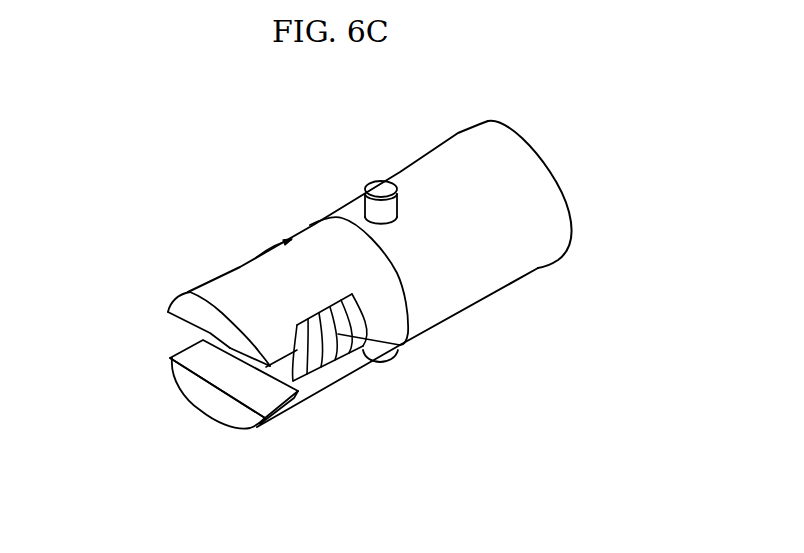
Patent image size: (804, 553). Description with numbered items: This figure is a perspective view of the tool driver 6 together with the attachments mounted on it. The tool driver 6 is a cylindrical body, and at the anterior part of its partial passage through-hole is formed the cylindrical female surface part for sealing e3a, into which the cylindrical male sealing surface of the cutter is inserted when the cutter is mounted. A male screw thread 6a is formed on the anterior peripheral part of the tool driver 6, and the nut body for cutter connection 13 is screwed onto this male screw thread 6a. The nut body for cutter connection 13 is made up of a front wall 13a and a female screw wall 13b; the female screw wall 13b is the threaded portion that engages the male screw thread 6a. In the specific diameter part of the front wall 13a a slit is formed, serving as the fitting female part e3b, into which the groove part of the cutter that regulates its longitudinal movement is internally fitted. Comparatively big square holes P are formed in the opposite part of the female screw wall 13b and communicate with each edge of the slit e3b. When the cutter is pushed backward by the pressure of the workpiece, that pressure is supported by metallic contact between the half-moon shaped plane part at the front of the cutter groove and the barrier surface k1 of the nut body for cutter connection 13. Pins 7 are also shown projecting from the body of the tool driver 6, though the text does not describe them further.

The tool driver 6 is at (495, 273).
The male screw thread 6a is at (400, 345).
The pin 7 is at (380, 181).
The nut body for cutter connection 13 is at (305, 253).
The front wall 13a is at (200, 390).
The female screw wall 13b is at (312, 297).
The barrier surface k1 is at (233, 399).
The cylindrical female surface part for sealing e3a is at (270, 367).
The fitting female part e3b is at (178, 355).
The square hole P is at (242, 270).